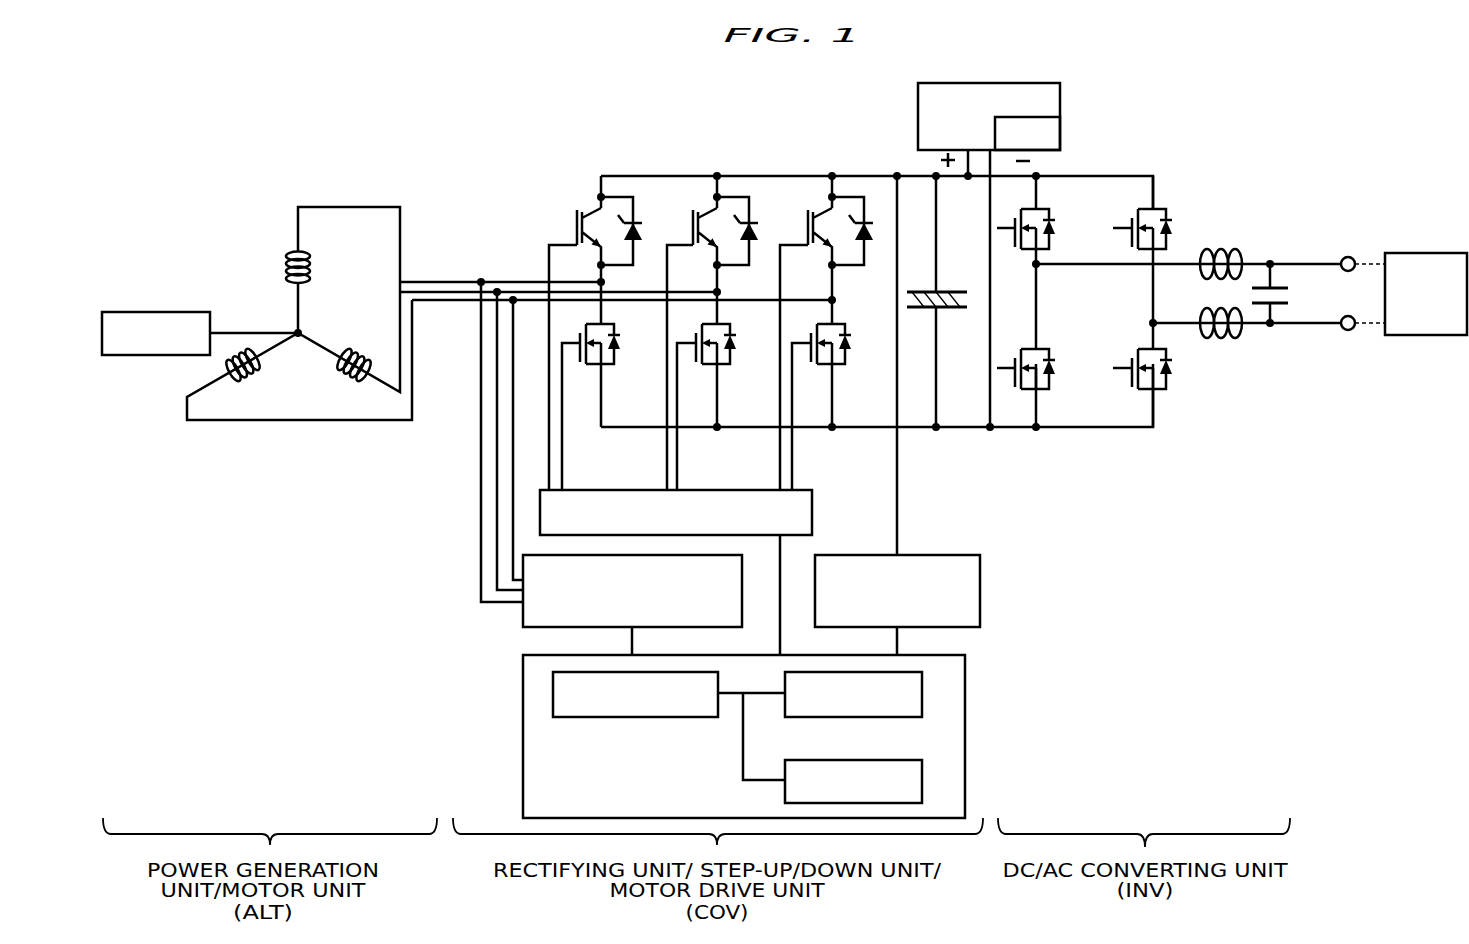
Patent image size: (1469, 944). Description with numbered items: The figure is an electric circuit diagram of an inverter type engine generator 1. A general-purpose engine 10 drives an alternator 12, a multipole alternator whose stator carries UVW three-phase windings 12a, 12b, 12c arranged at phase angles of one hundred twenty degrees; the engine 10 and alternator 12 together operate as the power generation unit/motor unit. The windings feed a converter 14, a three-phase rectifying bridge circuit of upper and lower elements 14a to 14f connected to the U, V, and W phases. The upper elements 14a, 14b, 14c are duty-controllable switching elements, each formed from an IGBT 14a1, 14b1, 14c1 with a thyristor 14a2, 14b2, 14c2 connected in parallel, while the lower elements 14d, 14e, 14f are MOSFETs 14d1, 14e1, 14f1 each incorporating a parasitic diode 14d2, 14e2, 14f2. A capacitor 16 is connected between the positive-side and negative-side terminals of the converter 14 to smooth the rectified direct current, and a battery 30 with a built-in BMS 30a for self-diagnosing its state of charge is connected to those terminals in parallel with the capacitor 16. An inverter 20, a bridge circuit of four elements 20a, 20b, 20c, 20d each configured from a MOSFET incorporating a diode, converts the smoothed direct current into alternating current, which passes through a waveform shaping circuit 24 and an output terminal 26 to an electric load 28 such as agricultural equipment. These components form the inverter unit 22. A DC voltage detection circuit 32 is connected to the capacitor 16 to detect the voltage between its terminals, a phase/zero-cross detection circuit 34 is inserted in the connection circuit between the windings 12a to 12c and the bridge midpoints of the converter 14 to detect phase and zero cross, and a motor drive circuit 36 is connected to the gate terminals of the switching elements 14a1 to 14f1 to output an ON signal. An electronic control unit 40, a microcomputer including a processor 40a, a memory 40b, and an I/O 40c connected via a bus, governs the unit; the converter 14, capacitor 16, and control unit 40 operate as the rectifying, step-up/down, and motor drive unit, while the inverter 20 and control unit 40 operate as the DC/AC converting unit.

The generator 1 is at (445, 505).
The engine 10 is at (177, 312).
The alternator 12 is at (321, 313).
The U-phase winding 12a is at (285, 260).
The V-phase winding 12b is at (360, 355).
The W-phase winding 12c is at (257, 373).
The converter 14 is at (870, 110).
The upper element 14a is at (652, 147).
The IGBT 14a1 is at (576, 222).
The thyristor 14a2 is at (634, 205).
The upper element 14b is at (782, 147).
The IGBT 14b1 is at (692, 222).
The thyristor 14b2 is at (750, 205).
The upper element 14c is at (790, 147).
The IGBT 14c1 is at (807, 222).
The thyristor 14c2 is at (865, 205).
The lower element 14d is at (618, 432).
The MOSFET 14d1 is at (578, 366).
The parasitic diode 14d2 is at (616, 366).
The lower element 14e is at (733, 432).
The MOSFET 14e1 is at (694, 366).
The parasitic diode 14e2 is at (732, 366).
The lower element 14f is at (849, 432).
The MOSFET 14f1 is at (809, 366).
The parasitic diode 14f2 is at (847, 366).
The capacitor 16 is at (947, 290).
The inverter 20 is at (1083, 275).
The element 20a is at (1015, 218).
The element 20b is at (1132, 218).
The element 20c is at (1015, 358).
The element 20d is at (1132, 358).
The inverter unit 22 is at (1167, 275).
The waveform shaping circuit 24 is at (1230, 248).
The output terminal 26 is at (1348, 256).
The electric load 28 is at (1420, 253).
The battery 30 is at (1012, 236).
The BMS 30a is at (1060, 130).
The DC voltage detection circuit 32 is at (938, 556).
The phase/zero-cross detection circuit 34 is at (740, 559).
The motor drive circuit 36 is at (812, 515).
The electronic control unit 40 is at (769, 735).
The processor 40a is at (659, 717).
The memory 40b is at (889, 717).
The I/O 40c is at (785, 794).